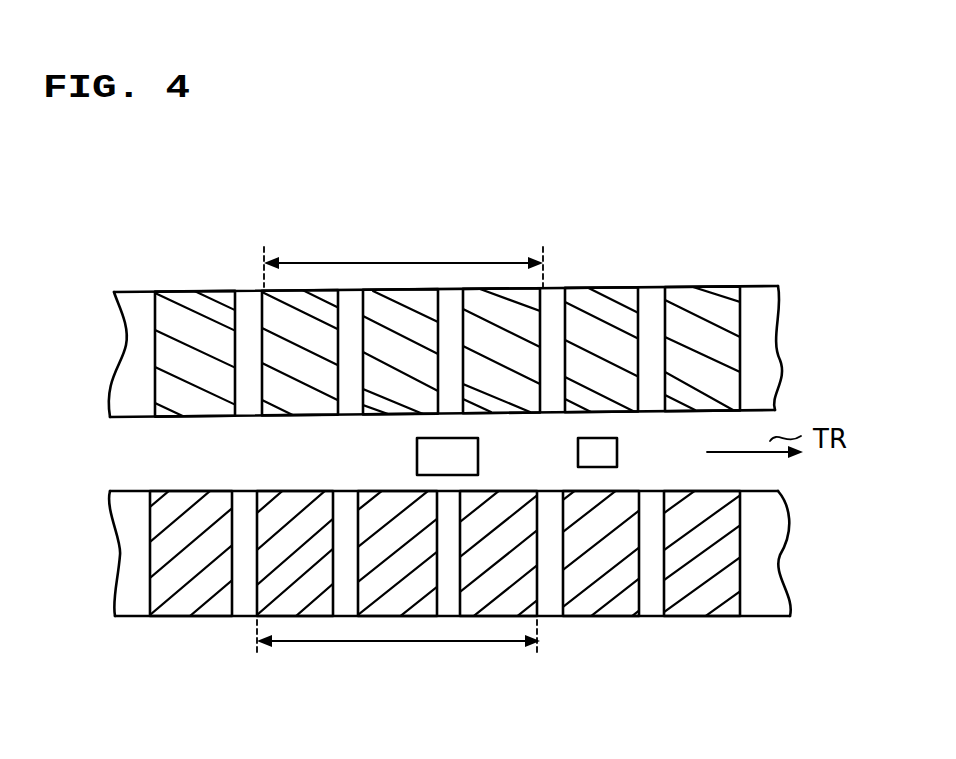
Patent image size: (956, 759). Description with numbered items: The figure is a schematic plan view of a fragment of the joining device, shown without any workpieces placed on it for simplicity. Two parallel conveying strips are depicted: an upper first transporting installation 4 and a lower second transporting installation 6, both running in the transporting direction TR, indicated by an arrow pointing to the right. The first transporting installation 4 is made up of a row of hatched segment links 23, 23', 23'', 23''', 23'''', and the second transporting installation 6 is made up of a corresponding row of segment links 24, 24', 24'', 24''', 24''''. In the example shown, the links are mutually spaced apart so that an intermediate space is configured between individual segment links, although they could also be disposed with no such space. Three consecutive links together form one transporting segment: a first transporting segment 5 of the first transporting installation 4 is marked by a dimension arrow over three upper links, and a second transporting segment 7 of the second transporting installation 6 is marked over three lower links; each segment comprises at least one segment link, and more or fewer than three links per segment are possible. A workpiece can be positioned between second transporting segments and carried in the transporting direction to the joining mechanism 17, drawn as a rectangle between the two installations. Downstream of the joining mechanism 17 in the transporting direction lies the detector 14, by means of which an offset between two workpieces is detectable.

The first transporting installation 4 is at (183, 252).
The first transporting segment 5 is at (428, 262).
The second transporting installation 6 is at (583, 645).
The second transporting segment 7 is at (390, 647).
The detector 14 is at (617, 447).
The joining mechanism 17 is at (428, 456).
The segment link 23 is at (231, 320).
The segment link 23' is at (333, 310).
The segment link 23'' is at (466, 295).
The segment link 23''' is at (568, 306).
The segment link 23'''' is at (667, 314).
The segment link 24 is at (234, 578).
The segment link 24' is at (374, 584).
The segment link 24'' is at (455, 585).
The segment link 24''' is at (571, 580).
The segment link 24'''' is at (682, 571).